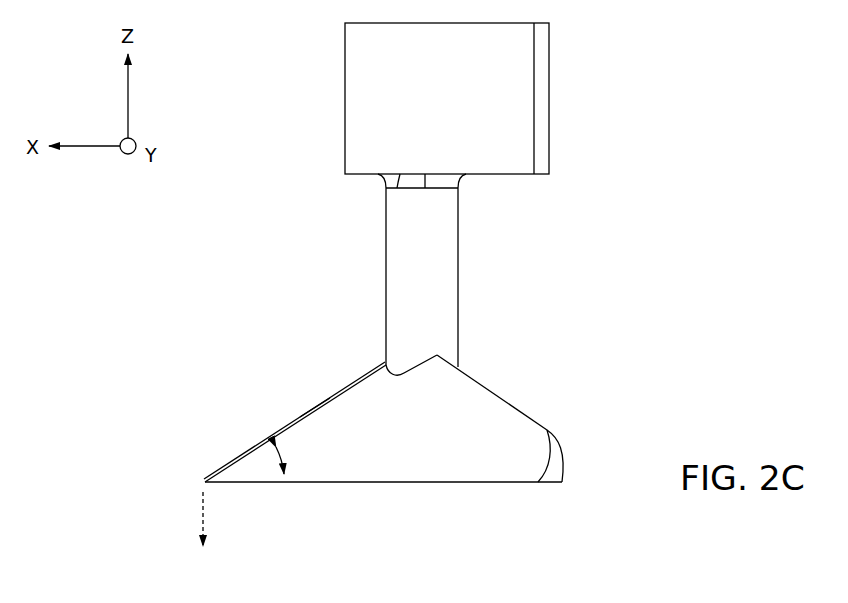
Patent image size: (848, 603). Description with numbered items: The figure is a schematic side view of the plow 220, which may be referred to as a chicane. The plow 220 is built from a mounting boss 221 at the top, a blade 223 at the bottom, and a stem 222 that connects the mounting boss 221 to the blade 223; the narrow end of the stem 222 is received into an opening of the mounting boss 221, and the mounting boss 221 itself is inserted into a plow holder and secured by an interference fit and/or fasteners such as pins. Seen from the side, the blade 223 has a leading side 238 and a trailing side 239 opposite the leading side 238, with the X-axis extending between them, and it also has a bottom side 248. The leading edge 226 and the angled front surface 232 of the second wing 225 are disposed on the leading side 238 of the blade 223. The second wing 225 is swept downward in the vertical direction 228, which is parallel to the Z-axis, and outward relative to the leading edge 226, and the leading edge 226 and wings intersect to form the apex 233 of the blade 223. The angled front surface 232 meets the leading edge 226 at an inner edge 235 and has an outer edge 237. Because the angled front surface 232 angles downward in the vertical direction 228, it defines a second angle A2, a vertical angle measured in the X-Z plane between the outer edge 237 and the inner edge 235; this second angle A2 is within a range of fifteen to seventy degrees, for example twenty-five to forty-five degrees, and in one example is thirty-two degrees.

The plow 220 is at (689, 153).
The mounting boss 221 is at (549, 62).
The stem 222 is at (432, 253).
The blade 223 is at (360, 378).
The second wing 225 is at (298, 484).
The leading edge 226 is at (238, 458).
The vertical direction 228 is at (203, 510).
The angled front surface 232 is at (423, 442).
The apex 233 is at (205, 482).
The inner edge 235 is at (318, 414).
The outer edge 237 is at (497, 482).
The leading side 238 is at (248, 408).
The trailing side 239 is at (512, 385).
The bottom side 248 is at (330, 484).
The second angle A2 is at (286, 460).